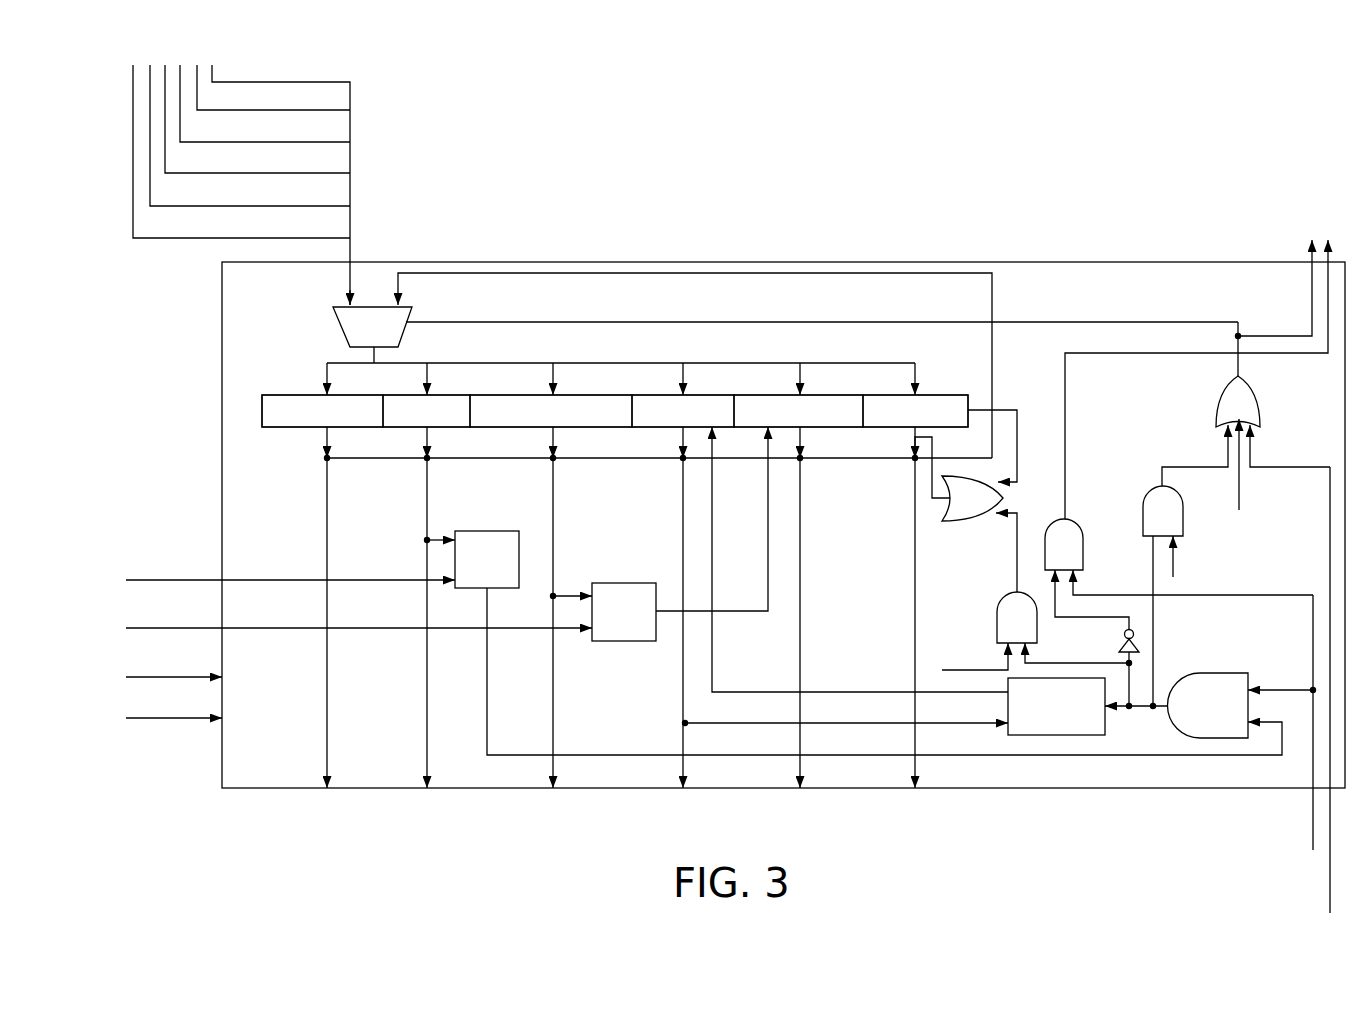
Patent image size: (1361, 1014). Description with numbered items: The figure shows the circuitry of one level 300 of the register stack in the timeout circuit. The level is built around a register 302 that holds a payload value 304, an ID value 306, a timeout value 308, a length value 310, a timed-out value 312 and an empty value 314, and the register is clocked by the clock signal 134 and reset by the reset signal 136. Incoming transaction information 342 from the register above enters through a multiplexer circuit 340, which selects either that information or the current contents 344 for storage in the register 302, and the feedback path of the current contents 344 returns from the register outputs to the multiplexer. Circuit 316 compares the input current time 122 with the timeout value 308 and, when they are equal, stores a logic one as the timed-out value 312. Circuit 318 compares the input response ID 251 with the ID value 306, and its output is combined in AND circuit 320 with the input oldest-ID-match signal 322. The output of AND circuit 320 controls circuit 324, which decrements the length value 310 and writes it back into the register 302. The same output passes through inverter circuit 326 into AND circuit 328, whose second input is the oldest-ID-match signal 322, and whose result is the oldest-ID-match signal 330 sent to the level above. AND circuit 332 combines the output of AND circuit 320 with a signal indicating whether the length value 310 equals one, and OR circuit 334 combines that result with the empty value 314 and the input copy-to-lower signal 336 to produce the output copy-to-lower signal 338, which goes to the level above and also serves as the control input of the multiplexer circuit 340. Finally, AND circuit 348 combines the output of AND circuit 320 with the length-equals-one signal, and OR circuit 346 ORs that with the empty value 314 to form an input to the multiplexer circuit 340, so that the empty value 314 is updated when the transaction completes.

The level 300 is at (960, 262).
The register 302 is at (262, 395).
The payload value 304 is at (322, 411).
The ID value 306 is at (426, 411).
The timeout value 308 is at (551, 411).
The length value 310 is at (683, 411).
The timed-out value 312 is at (798, 411).
The empty value 314 is at (915, 411).
The circuit 316 is at (624, 612).
The circuit 318 is at (487, 559).
The AND circuit 320 is at (1208, 705).
The oldest-ID-match signal 322 is at (1313, 833).
The circuit 324 is at (1056, 706).
The inverter circuit 326 is at (1122, 637).
The AND circuit 328 is at (1064, 544).
The oldest-ID-match signal 330 is at (1065, 397).
The AND circuit 332 is at (1163, 511).
The OR circuit 334 is at (1238, 401).
The copy-to-lower signal 336 is at (1330, 870).
The copy-to-lower signal 338 is at (1240, 320).
The multiplexer circuit 340 is at (785, 320).
The transaction information 342 is at (352, 226).
The current contents 344 is at (510, 274).
The OR circuit 346 is at (972, 498).
The AND circuit 348 is at (1017, 617).
The response ID 251 is at (238, 580).
The current time 122 is at (238, 628).
The clock signal 134 is at (187, 676).
The reset signal 136 is at (187, 717).